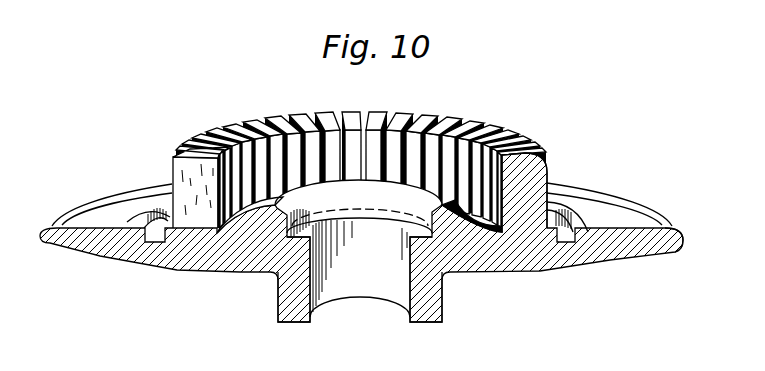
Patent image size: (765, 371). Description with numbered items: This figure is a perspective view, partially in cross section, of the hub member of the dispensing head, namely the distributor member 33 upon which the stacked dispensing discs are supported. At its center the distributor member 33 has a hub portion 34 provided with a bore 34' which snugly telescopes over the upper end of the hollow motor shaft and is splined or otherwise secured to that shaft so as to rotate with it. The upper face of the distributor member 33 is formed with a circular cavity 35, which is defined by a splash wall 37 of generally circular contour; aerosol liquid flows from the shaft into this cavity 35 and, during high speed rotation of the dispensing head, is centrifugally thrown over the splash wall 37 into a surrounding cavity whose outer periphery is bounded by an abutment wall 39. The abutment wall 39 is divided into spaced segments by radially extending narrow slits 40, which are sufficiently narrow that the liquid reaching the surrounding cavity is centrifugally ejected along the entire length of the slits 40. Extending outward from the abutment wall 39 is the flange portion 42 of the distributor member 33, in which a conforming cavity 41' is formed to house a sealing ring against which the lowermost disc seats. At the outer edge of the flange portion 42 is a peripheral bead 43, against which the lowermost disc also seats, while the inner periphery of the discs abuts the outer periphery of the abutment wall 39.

The distributor member 33 is at (197, 266).
The hub portion 34 is at (346, 296).
The bore 34' is at (359, 283).
The circular cavity 35 is at (452, 213).
The splash wall 37 is at (262, 238).
The abutment wall 39 is at (525, 175).
The slits 40 is at (296, 126).
The conforming cavity 41' is at (568, 253).
The flange portion 42 is at (129, 256).
The peripheral bead 43 is at (668, 229).